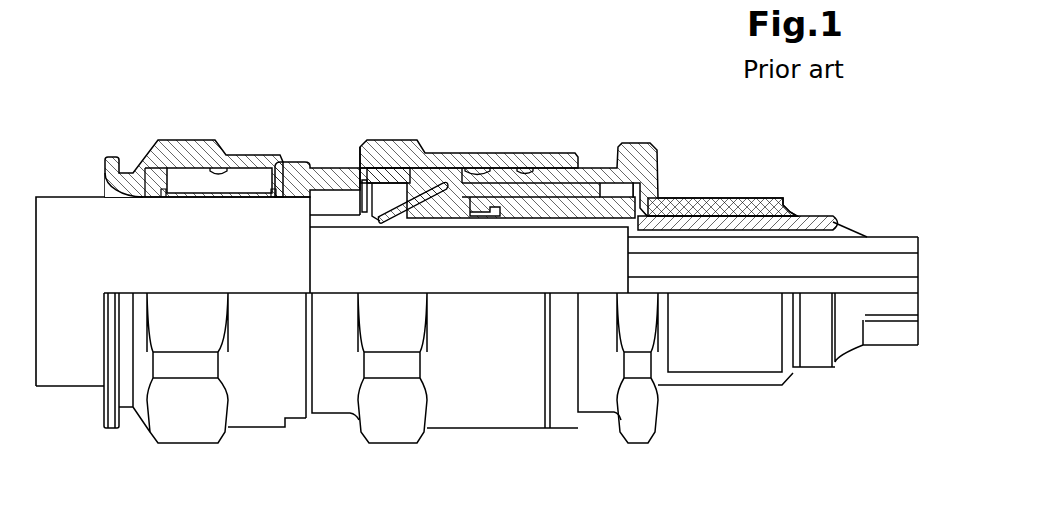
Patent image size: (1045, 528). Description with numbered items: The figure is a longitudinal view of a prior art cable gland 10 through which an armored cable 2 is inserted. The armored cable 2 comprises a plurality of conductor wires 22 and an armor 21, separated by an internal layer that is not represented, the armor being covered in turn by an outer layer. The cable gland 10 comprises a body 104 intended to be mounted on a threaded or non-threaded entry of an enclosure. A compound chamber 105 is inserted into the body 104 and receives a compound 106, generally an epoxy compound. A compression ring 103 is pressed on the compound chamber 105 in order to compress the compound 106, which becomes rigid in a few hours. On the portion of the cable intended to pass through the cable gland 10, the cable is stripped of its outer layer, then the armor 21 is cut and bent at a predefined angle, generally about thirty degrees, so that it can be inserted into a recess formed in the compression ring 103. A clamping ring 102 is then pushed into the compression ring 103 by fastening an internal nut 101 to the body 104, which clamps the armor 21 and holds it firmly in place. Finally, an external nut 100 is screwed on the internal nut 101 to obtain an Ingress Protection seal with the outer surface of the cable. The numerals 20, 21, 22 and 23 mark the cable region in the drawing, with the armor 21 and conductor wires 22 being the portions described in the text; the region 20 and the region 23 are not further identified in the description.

The cable gland 10 is at (463, 100).
The armored cable 2 is at (86, 220).
The connector body 20 is at (77, 367).
The armor 21 is at (340, 218).
The conductor wires 22 is at (918, 300).
The housing body 23 is at (559, 236).
The external nut 100 is at (197, 152).
The internal nut 101 is at (323, 177).
The clamping ring 102 is at (397, 190).
The compression ring 103 is at (455, 207).
The body 104 is at (712, 198).
The compound chamber 105 is at (822, 224).
The compound 106 is at (603, 210).